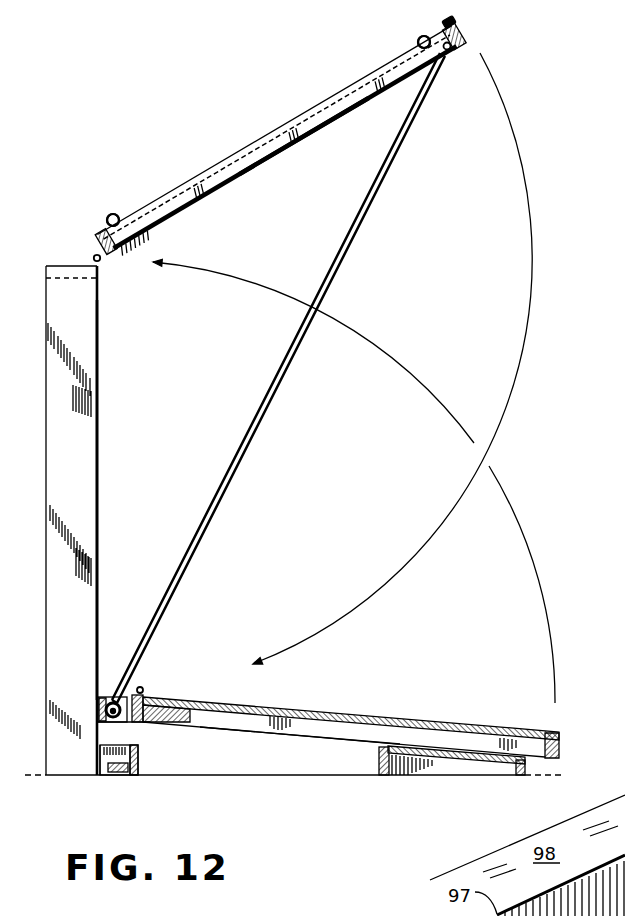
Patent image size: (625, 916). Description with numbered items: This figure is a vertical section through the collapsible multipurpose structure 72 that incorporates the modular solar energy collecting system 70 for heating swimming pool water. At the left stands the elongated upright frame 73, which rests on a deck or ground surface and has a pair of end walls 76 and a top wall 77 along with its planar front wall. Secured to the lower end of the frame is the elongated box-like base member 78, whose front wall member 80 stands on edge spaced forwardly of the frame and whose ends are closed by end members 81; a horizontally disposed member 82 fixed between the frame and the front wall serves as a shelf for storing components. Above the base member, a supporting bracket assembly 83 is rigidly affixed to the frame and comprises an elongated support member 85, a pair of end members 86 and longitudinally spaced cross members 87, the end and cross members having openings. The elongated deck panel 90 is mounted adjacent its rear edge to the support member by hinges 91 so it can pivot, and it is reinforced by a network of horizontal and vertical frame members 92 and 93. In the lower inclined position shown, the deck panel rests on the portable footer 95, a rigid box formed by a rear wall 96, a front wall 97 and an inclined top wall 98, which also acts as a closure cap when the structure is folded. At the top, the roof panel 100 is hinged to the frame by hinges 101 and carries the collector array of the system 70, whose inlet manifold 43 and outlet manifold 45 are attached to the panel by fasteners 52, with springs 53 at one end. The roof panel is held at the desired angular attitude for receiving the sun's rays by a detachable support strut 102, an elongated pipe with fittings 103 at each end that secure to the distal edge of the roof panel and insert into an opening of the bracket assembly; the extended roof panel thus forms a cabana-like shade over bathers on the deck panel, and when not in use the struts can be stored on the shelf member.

The inlet manifold 43 is at (110, 213).
The outlet manifold 45 is at (419, 40).
The fasteners 52 is at (102, 230).
The springs 53 is at (445, 23).
The modular solar energy collecting system 70 is at (237, 134).
The multipurpose structure 72 is at (68, 165).
The upright frame 73 is at (43, 345).
The end walls 76 is at (90, 468).
The top wall 77 is at (67, 267).
The base member 78 is at (147, 763).
The front wall member 80 is at (130, 777).
The end members 81 is at (100, 777).
The horizontally disposed member 82 is at (115, 777).
The supporting bracket assembly 83 is at (107, 670).
The support member 85 is at (133, 723).
The end members 86 is at (101, 709).
The cross members 87 is at (115, 696).
The deck panel 90 is at (389, 715).
The hinges 91 is at (143, 690).
The horizontal frame members 92 is at (197, 700).
The vertical frame members 93 is at (305, 732).
The footer 95 is at (368, 765).
The rear wall 96 is at (380, 776).
The front wall 97 is at (520, 774).
The inclined top wall 98 is at (437, 758).
The roof panel 100 is at (324, 124).
The hinges 101 is at (100, 262).
The support struts 102 is at (288, 392).
The fittings 103 is at (449, 60).